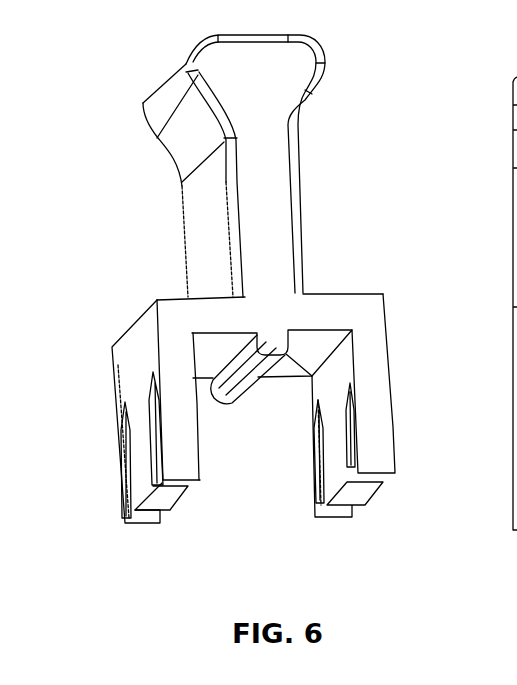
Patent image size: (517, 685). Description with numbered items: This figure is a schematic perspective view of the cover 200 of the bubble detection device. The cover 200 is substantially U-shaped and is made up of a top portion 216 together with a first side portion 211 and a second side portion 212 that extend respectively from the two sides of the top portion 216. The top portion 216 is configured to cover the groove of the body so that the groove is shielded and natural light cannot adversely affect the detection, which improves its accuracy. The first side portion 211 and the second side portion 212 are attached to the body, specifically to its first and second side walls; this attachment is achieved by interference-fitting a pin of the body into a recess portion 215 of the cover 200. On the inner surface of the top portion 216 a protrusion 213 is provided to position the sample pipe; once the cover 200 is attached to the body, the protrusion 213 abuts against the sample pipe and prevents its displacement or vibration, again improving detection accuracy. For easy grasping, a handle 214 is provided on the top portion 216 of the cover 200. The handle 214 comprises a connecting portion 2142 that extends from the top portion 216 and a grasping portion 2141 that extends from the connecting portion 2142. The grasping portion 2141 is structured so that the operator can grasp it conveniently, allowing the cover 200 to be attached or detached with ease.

The cover 200 is at (340, 100).
The handle 214 is at (257, 163).
The grasping portion 2141 is at (257, 72).
The connecting portion 2142 is at (270, 218).
The top portion 216 is at (322, 317).
The first side portion 211 is at (183, 440).
The second side portion 212 is at (368, 377).
The protrusion 213 is at (255, 378).
The recess portion 215 is at (133, 480).